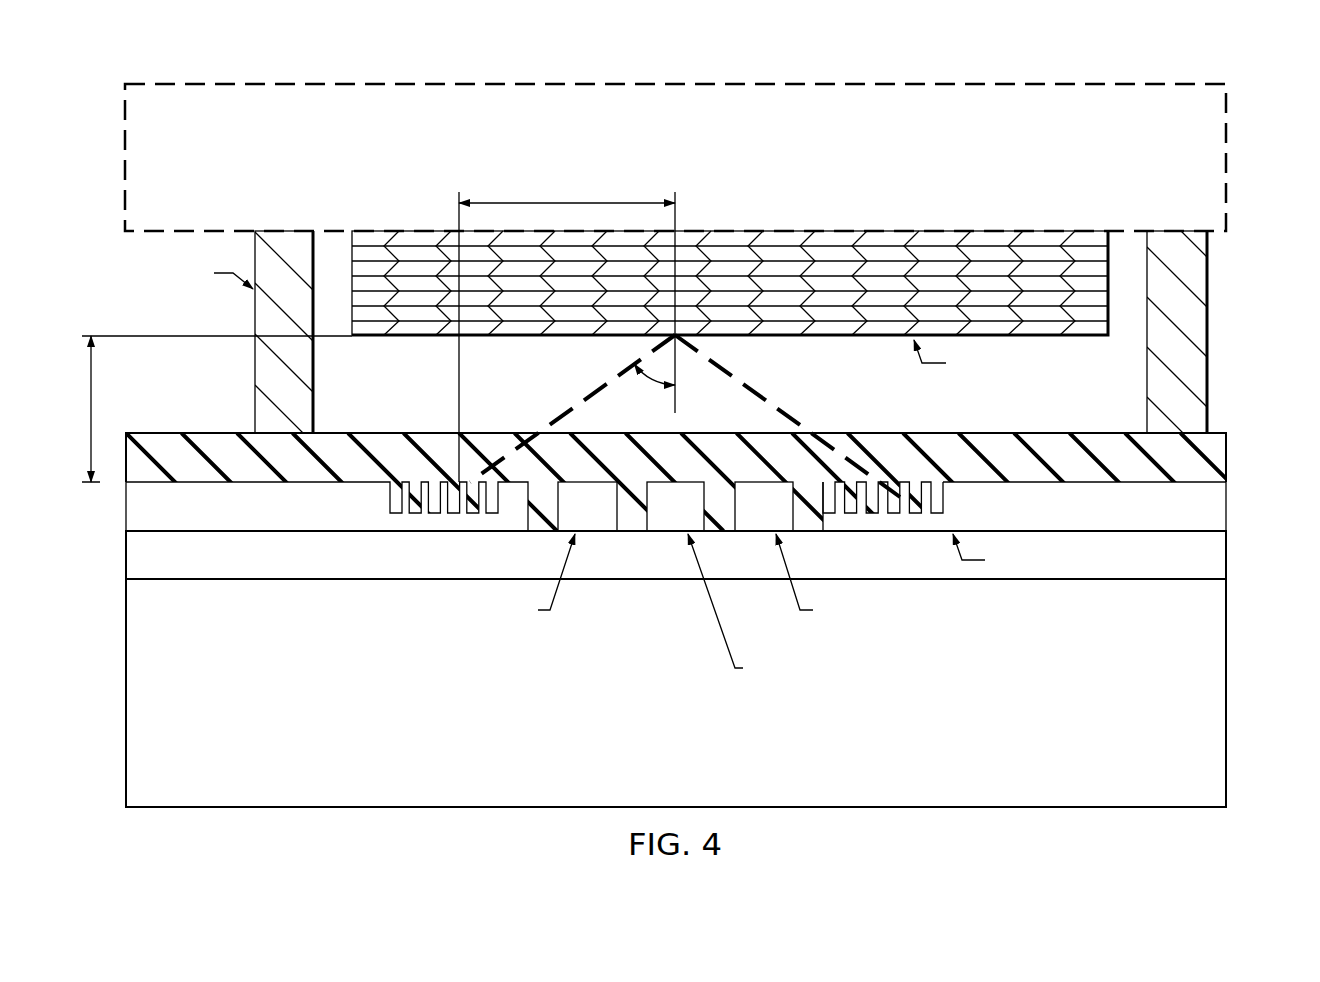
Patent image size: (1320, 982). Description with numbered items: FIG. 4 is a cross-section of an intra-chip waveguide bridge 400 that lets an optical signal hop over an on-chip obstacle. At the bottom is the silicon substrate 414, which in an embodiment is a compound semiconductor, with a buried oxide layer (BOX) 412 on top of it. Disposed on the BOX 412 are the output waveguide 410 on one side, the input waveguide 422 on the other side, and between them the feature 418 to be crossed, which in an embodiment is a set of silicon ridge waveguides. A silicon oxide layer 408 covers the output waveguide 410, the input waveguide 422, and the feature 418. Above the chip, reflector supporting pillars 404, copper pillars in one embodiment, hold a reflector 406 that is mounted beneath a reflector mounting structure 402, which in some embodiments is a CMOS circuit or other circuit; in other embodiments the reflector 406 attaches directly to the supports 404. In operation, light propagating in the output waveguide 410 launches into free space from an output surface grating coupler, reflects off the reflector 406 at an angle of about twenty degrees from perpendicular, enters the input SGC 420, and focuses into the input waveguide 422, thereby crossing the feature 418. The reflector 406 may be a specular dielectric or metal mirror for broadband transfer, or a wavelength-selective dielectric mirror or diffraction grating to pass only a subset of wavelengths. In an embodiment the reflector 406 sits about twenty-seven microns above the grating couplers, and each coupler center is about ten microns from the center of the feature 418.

The intra-chip waveguide bridge 400 is at (1258, 189).
The reflector mounting structure 402 is at (693, 171).
The reflector supporting pillars 404 is at (254, 365).
The reflector 406 is at (817, 337).
The oxide layer 408 is at (382, 436).
The output waveguide 410 is at (126, 507).
The buried oxide layer (BOX) 412 is at (126, 557).
The silicon substrate 414 is at (692, 780).
The feature to be crossed 418 is at (606, 522).
The input surface grating coupler (SGC) 420 is at (906, 482).
The input waveguide 422 is at (1227, 507).